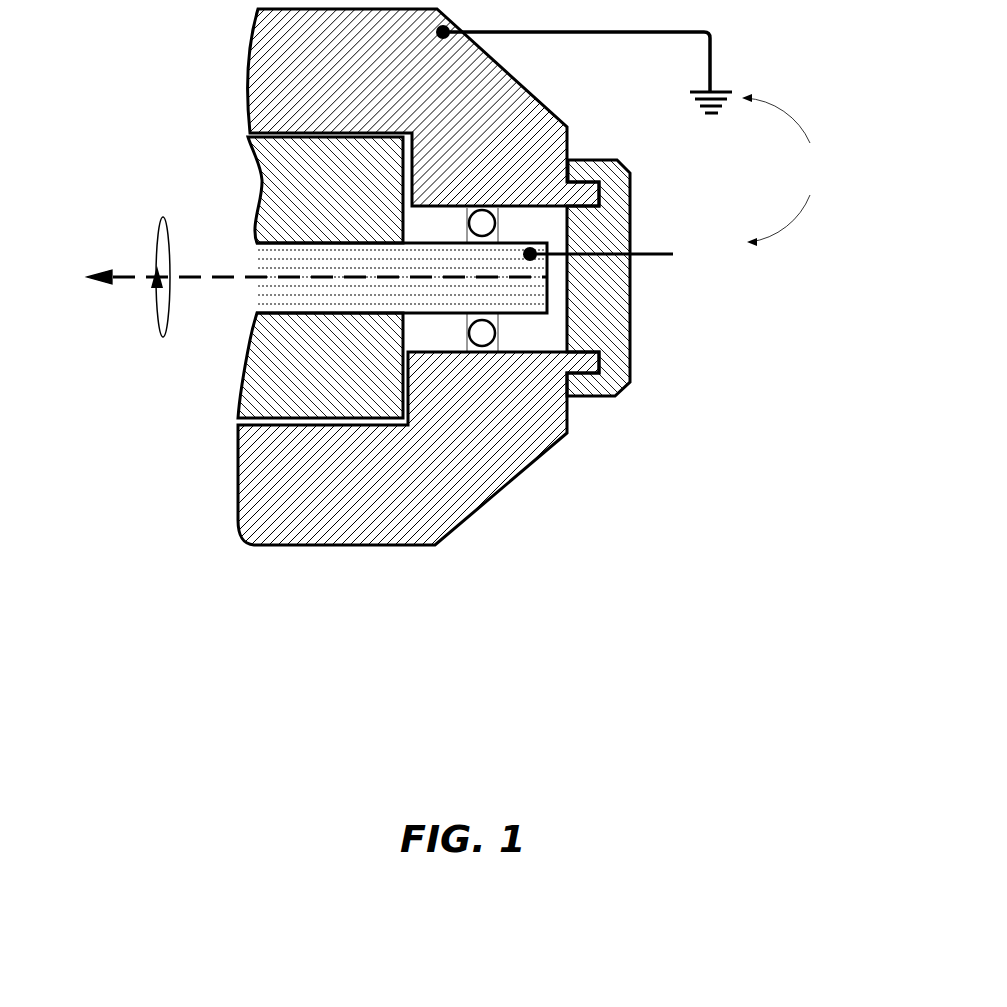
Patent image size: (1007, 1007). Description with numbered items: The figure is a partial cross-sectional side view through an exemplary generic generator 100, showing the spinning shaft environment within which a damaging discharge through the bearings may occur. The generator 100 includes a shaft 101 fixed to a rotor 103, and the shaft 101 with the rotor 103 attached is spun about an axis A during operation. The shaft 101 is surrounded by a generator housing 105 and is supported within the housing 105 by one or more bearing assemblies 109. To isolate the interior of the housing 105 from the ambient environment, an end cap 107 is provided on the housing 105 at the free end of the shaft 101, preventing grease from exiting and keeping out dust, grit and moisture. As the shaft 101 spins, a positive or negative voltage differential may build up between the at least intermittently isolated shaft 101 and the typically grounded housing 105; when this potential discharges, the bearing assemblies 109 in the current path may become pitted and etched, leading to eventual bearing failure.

The generator 100 is at (456, 469).
The shaft 101 is at (265, 298).
The rotor 103 is at (245, 388).
The generator housing 105 is at (258, 532).
The end cap 107 is at (622, 328).
The bearing assembly 109 is at (482, 335).